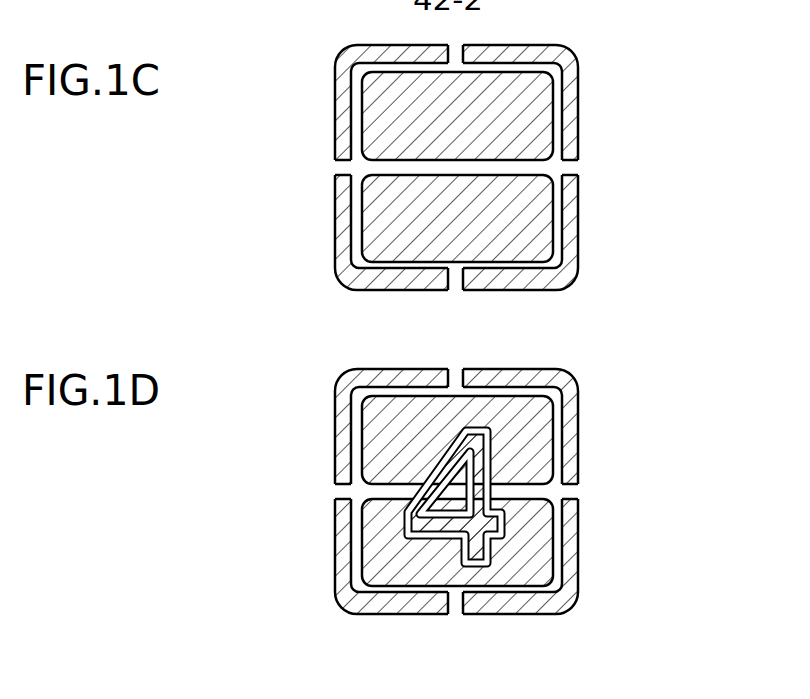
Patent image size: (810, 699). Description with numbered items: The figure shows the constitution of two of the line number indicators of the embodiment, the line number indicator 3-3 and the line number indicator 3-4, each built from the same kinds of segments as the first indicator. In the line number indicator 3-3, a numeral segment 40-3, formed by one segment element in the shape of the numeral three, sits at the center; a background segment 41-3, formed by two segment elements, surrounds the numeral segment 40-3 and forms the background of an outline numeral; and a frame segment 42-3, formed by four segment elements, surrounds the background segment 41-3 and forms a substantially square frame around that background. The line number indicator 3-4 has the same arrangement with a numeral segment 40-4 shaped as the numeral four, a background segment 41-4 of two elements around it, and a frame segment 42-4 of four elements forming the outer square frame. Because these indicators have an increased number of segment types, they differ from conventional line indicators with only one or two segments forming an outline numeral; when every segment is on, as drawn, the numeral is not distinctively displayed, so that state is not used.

In FIG. 1C, the line number indicator 3-3 is at (747, 20).
In FIG. 1C, the numeral segment 40-3 is at (483, 137).
In FIG. 1C, the background segment 41-3 is at (376, 98).
In FIG. 1C, the frame segment 42-3 is at (464, 43).
In FIG. 1D, the line number indicator 3-4 is at (745, 327).
In FIG. 1D, the numeral segment 40-4 is at (477, 467).
In FIG. 1D, the background segment 41-4 is at (376, 421).
In FIG. 1D, the frame segment 42-4 is at (464, 367).